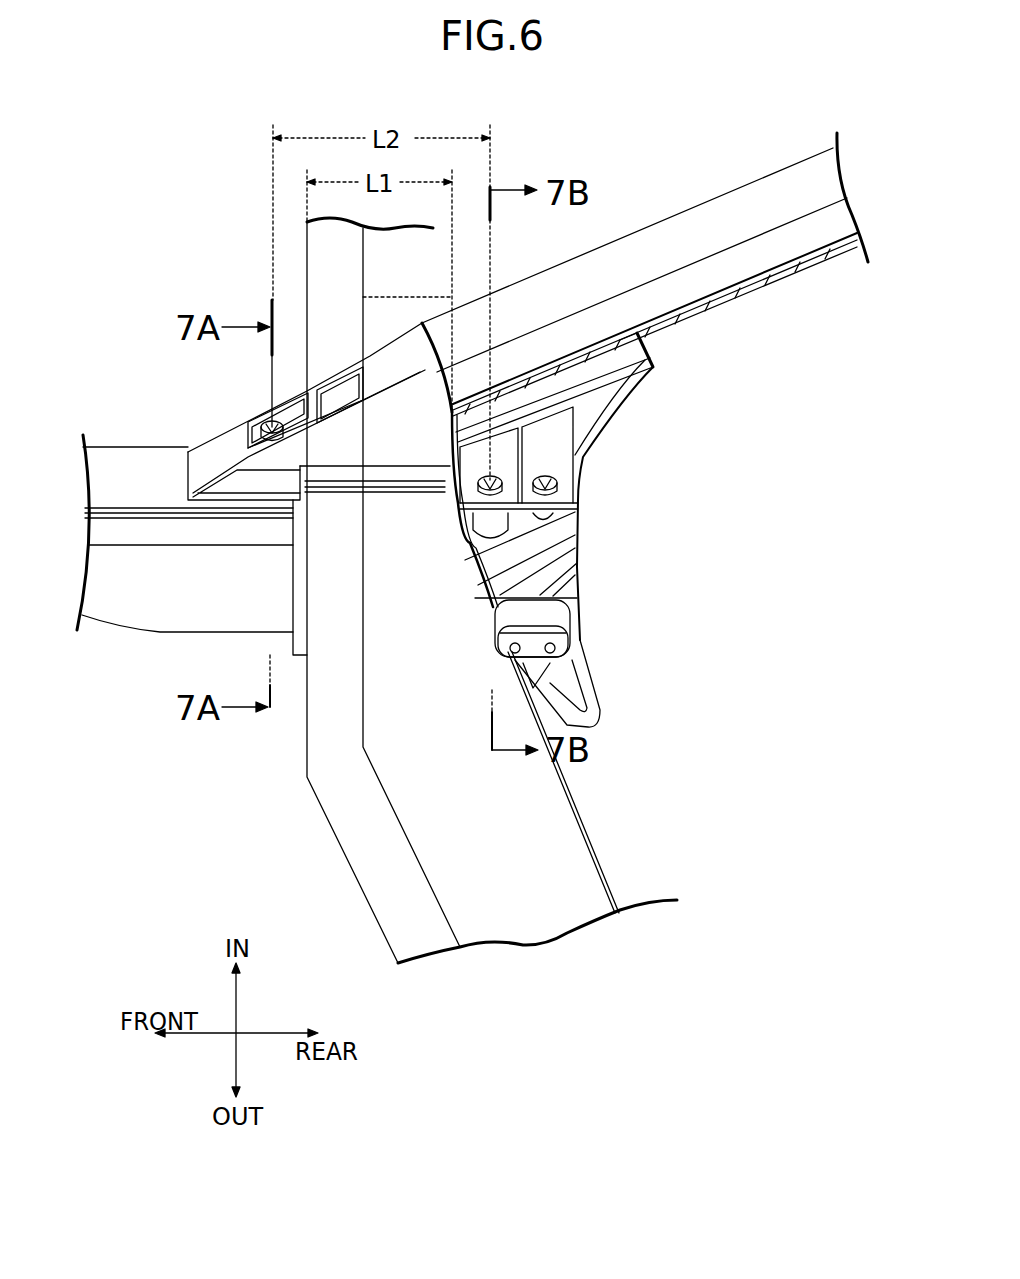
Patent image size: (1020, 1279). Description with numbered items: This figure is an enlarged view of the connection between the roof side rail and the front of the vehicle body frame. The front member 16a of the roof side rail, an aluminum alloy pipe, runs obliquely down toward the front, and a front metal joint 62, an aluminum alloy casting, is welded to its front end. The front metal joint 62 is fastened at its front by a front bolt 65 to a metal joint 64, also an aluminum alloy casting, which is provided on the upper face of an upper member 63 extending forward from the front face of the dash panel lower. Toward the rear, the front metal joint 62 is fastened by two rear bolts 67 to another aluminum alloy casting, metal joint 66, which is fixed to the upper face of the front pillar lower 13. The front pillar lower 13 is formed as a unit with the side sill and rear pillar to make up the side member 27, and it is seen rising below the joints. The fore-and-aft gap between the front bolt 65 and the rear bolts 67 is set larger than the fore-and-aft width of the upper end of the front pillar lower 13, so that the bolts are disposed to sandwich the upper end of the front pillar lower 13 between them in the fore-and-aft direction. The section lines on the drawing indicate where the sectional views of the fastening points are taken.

The front member 16a is at (737, 205).
The front metal joint 62 is at (405, 437).
The upper member 63 is at (127, 463).
The metal joint 64 is at (213, 460).
The front bolt 65 is at (270, 420).
The metal joint 66 is at (562, 545).
The rear bolts 67 is at (497, 472).
The side member 27 is at (592, 843).
The front pillar lower 13 is at (563, 782).